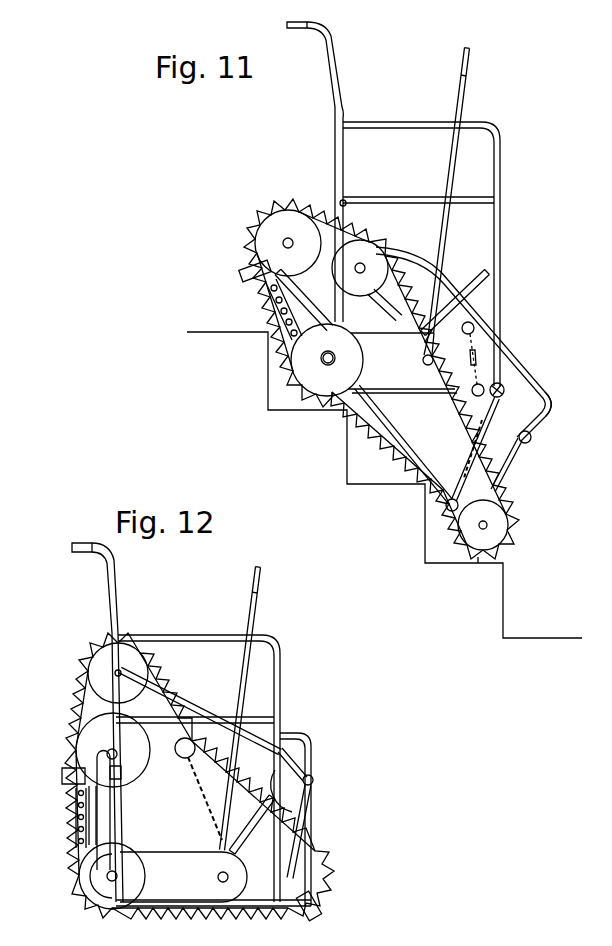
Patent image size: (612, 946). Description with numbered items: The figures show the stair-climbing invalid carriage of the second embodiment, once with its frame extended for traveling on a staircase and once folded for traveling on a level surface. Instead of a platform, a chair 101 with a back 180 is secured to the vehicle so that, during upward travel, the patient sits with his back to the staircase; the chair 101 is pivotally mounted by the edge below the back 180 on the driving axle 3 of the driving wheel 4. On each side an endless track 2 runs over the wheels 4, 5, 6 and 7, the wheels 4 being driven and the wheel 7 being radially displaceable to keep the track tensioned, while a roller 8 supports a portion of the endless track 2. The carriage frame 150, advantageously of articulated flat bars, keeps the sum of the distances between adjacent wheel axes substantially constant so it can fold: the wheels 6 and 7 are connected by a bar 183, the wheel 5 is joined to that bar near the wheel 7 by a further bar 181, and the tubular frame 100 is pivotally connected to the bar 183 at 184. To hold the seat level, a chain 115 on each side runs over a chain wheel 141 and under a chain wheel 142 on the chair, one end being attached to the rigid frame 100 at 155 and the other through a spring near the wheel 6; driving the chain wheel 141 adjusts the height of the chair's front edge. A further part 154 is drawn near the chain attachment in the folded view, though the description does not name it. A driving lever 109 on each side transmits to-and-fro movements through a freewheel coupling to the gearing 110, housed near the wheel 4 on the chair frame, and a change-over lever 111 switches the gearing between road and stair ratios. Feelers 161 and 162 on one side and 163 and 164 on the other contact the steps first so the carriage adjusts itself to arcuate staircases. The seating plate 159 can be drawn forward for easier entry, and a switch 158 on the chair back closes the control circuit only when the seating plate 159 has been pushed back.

In FIG. 11, the endless track 2 is at (268, 315).
In FIG. 12, the endless track 2 is at (70, 705).
In FIG. 11, the driving axle 3 is at (327, 368).
In FIG. 11, the driving wheel 4 is at (342, 370).
In FIG. 12, the driving wheel 4 is at (80, 877).
In FIG. 11, the wheel 5 is at (282, 276).
In FIG. 12, the wheel 5 is at (88, 752).
In FIG. 11, the wheel 6 is at (492, 536).
In FIG. 11, the tensioning wheel 7 is at (354, 260).
In FIG. 12, the tensioning wheel 7 is at (100, 673).
In FIG. 11, the roller 8 is at (292, 303).
In FIG. 11, the tubular frame 100 is at (494, 363).
In FIG. 12, the tubular frame 100 is at (302, 739).
In FIG. 11, the chair 101 is at (405, 122).
In FIG. 12, the chair 101 is at (195, 636).
In FIG. 11, the driving lever 109 is at (463, 95).
In FIG. 12, the driving lever 109 is at (260, 608).
In FIG. 11, the gearing 110 is at (378, 367).
In FIG. 12, the gearing 110 is at (162, 889).
In FIG. 11, the change-over lever 111 is at (471, 284).
In FIG. 12, the change-over lever 111 is at (258, 818).
In FIG. 11, the chain 115 is at (499, 398).
In FIG. 12, the chain 115 is at (202, 810).
In FIG. 11, the chain wheel 141 is at (501, 386).
In FIG. 11, the chain wheel 142 is at (472, 392).
In FIG. 11, the carriage frame 150 is at (512, 466).
In FIG. 12, the carriage frame 150 is at (301, 808).
In FIG. 12, the clamp 154 is at (121, 773).
In FIG. 11, the chain attachment point 155 is at (474, 328).
In FIG. 12, the chain attachment point 155 is at (175, 760).
In FIG. 11, the switch 158 is at (347, 207).
In FIG. 11, the seating plate 159 is at (378, 198).
In FIG. 12, the seating plate 159 is at (250, 720).
In FIG. 12, the feeler 161 is at (321, 905).
In FIG. 11, the feeler 162 is at (478, 566).
In FIG. 12, the feeler 163 is at (62, 777).
In FIG. 11, the feeler 164 is at (243, 270).
In FIG. 11, the chair back 180 is at (330, 84).
In FIG. 12, the chair back 180 is at (110, 600).
In FIG. 12, the bar 181 is at (115, 827).
In FIG. 11, the bar 183 is at (547, 407).
In FIG. 11, the pivot connection 184 is at (531, 441).
In FIG. 12, the pivot connection 184 is at (313, 777).